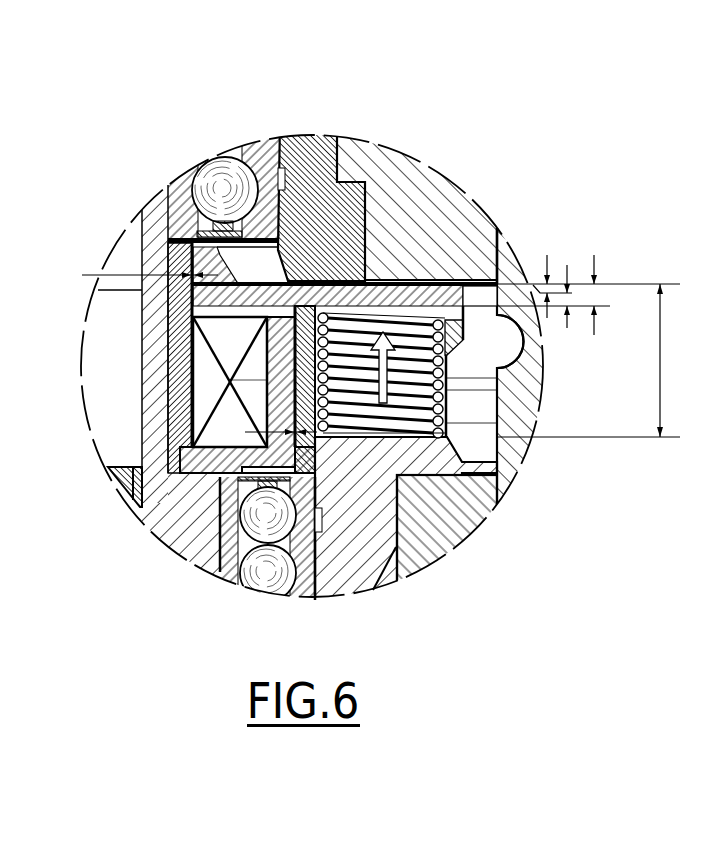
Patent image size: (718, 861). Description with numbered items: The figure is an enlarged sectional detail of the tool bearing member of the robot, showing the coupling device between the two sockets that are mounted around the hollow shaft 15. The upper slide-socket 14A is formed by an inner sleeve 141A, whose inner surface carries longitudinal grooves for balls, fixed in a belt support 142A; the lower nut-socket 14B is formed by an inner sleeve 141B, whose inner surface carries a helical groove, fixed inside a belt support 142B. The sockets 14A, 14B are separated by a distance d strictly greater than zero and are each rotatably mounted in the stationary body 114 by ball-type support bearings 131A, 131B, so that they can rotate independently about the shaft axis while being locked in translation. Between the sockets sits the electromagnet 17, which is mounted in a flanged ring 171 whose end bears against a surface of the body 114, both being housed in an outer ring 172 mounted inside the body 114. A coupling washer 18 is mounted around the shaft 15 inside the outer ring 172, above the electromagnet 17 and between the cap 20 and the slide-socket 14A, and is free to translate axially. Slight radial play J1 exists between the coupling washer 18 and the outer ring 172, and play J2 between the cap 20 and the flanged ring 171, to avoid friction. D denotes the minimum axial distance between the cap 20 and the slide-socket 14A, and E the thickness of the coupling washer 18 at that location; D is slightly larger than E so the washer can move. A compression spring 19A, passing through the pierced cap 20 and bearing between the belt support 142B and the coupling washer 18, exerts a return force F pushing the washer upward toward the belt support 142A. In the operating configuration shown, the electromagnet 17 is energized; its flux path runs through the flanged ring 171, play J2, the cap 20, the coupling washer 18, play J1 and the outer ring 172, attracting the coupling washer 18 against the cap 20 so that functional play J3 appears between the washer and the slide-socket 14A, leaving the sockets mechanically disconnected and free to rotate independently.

The socket 14A is at (387, 153).
The belt support 142A is at (315, 162).
The inner sleeve 141A is at (408, 227).
The support bearing 131A is at (176, 200).
The body 114 is at (158, 218).
The shaft 15 is at (505, 254).
The coupling washer 18 is at (210, 297).
The outer ring 172 is at (180, 342).
The cap 20 is at (310, 358).
The electromagnet 17 is at (203, 402).
The flanged ring 171 is at (198, 463).
The elastic member 19A is at (447, 400).
The support bearing 131B is at (228, 573).
The inner sleeve 141B is at (435, 533).
The belt support 142B is at (348, 573).
The socket 14B is at (411, 531).
The radial play J1 is at (134, 275).
The radial play J2 is at (266, 420).
The functional play J3 is at (545, 270).
The minimum distance D is at (594, 278).
The thickness E is at (567, 309).
The distance d is at (668, 360).
The return force F is at (376, 367).